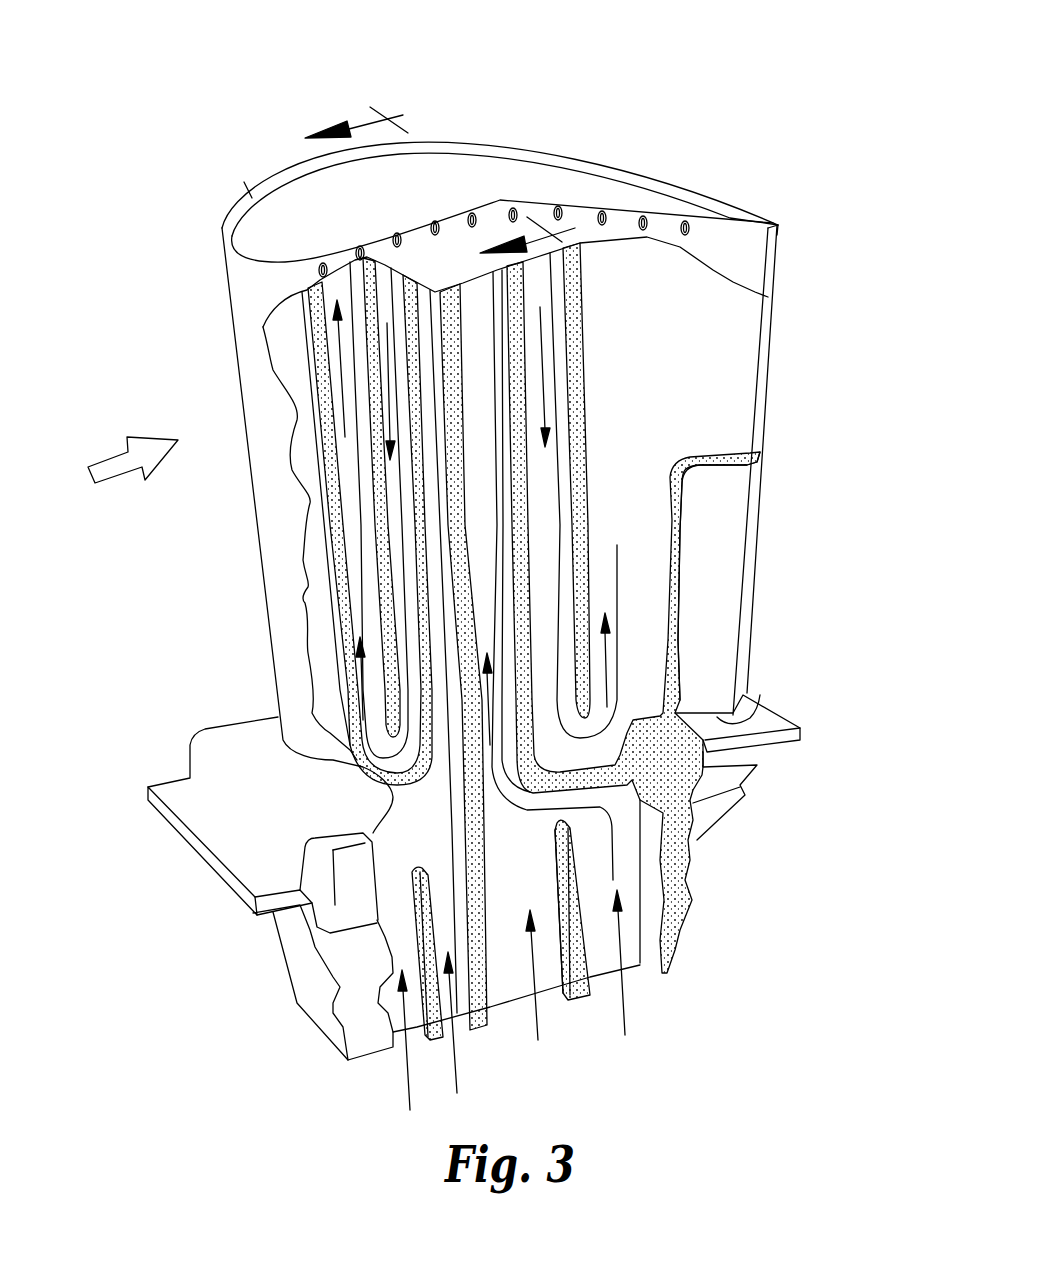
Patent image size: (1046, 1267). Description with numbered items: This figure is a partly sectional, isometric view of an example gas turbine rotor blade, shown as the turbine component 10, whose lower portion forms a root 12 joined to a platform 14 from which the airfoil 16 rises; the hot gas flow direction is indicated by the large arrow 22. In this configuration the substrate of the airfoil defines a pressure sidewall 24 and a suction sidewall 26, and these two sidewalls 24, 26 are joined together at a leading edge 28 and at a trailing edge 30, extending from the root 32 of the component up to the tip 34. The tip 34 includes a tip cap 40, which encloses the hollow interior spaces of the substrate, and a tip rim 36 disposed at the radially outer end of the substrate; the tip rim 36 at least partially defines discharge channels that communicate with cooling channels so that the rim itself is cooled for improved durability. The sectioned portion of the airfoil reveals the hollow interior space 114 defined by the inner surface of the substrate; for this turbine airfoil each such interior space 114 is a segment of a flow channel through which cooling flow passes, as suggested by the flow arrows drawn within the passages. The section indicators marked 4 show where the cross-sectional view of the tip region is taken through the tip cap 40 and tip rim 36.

The turbine blade 10 is at (667, 97).
The root 12 is at (297, 950).
The platform 14 is at (226, 738).
The airfoil 16 is at (266, 597).
The hot gas flow direction 22 is at (108, 450).
The pressure sidewall 24 is at (765, 258).
The suction sidewall 26 is at (503, 179).
The leading edge 28 is at (262, 537).
The trailing edge 30 is at (762, 500).
The root 32 is at (745, 716).
The tip 34 is at (262, 167).
The tip rim 36 is at (243, 183).
The tip cap 40 is at (285, 233).
The hollow interior space 114 is at (505, 868).
The section line 4- 4 is at (428, 193).